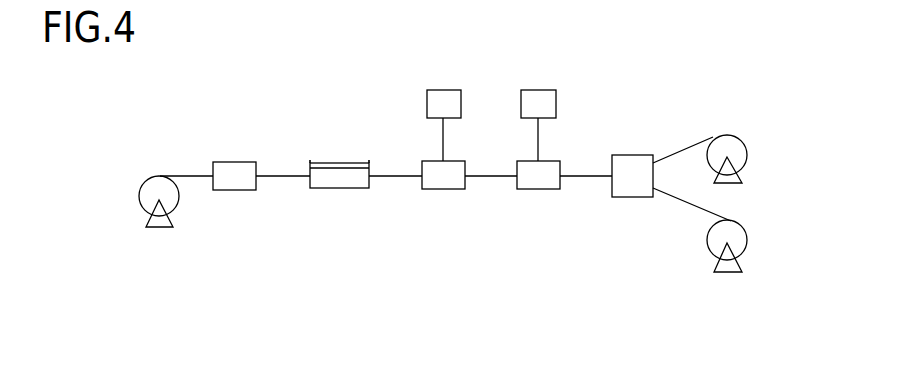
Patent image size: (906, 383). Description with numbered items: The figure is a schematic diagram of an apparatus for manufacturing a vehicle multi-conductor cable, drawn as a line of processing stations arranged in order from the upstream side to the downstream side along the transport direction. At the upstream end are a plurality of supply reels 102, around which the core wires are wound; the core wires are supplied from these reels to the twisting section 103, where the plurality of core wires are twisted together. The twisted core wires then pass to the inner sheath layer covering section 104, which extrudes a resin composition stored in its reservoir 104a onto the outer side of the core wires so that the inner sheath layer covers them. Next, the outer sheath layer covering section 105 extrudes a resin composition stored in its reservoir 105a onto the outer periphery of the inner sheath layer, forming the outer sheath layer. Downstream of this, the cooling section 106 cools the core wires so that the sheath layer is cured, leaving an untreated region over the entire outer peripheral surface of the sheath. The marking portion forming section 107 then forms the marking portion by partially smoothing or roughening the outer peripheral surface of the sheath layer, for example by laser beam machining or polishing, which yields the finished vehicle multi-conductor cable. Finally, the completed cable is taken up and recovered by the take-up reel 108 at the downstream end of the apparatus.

The supply reels 102 is at (727, 145).
The twisting section 103 is at (632, 183).
The inner sheath layer covering section 104 is at (538, 183).
The reservoir 104a is at (538, 100).
The outer sheath layer covering section 105 is at (443, 183).
The reservoir 105a is at (443, 100).
The cooling section 106 is at (338, 182).
The marking portion forming section 107 is at (232, 182).
The take-up reel 108 is at (159, 187).